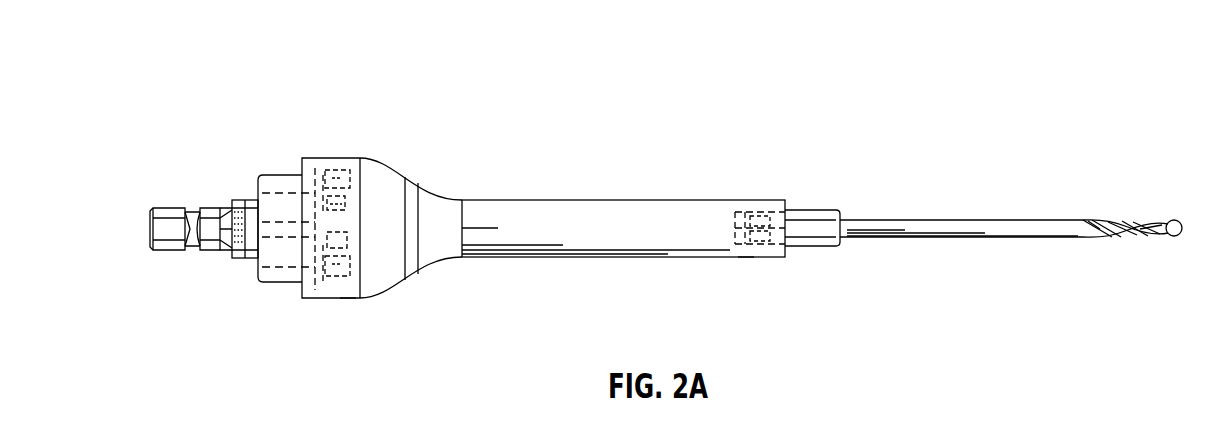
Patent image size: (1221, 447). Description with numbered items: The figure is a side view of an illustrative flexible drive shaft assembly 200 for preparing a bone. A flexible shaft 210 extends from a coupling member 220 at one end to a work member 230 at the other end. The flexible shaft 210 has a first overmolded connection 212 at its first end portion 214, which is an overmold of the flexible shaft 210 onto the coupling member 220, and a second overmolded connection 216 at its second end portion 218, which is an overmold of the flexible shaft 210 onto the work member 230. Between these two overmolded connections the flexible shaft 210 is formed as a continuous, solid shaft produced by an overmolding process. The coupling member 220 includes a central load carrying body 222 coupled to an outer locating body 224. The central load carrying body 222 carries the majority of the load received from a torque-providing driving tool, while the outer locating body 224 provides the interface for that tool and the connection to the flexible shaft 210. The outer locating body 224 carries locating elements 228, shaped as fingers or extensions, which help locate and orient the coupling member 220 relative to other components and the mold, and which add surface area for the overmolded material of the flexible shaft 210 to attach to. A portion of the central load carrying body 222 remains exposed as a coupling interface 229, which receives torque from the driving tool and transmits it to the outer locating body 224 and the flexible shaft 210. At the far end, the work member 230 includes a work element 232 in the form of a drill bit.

The flexible drive shaft assembly 200 is at (204, 43).
The flexible shaft 210 is at (583, 213).
The first overmolded connection 212 is at (345, 158).
The first end portion 214 is at (348, 298).
The second overmolded connection 216 is at (772, 200).
The second end portion 218 is at (746, 257).
The coupling member 220 is at (163, 210).
The central load carrying body 222 is at (293, 248).
The outer locating body 224 is at (280, 175).
The locating elements 228 is at (347, 177).
The coupling interface 229 is at (235, 258).
The work member 230 is at (800, 210).
The work element 232 is at (1174, 237).